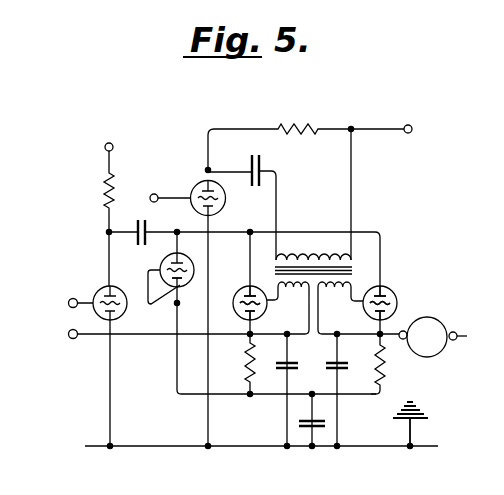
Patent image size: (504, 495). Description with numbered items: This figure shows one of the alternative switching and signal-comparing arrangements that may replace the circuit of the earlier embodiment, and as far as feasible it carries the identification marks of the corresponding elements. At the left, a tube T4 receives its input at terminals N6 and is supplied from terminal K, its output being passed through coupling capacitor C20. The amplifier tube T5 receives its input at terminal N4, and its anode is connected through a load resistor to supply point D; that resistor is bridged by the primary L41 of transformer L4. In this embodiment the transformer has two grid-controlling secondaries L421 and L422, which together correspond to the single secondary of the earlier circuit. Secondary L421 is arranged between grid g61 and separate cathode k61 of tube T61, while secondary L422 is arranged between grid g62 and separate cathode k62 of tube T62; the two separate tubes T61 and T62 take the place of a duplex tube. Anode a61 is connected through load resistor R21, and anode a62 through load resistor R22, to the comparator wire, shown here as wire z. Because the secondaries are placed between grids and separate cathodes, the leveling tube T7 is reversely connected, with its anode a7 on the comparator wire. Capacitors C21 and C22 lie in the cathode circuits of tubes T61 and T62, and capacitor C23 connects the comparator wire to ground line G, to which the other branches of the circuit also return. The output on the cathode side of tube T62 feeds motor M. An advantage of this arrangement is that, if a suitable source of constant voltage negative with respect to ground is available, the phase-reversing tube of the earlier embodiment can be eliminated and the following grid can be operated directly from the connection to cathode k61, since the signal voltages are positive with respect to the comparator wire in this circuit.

The supply terminal K is at (112, 141).
The supply point D is at (411, 133).
The input terminal N4 is at (152, 194).
The input terminals N6 is at (68, 334).
The ground line G is at (148, 446).
The tube T4 is at (96, 295).
The amplifier tube T5 is at (224, 300).
The leveling tube T7 is at (255, 313).
The anode of leveling tube a7 is at (179, 287).
The coupling capacitor C20 is at (137, 243).
The transformer L4 is at (333, 268).
The primary L41 is at (303, 253).
The grid-controlling secondary L421 is at (306, 291).
The grid-controlling secondary L422 is at (336, 291).
The tube T61 is at (238, 289).
The anode a61 is at (243, 286).
The grid g61 is at (233, 304).
The cathode k61 is at (243, 313).
The tube T62 is at (397, 299).
The anode a62 is at (382, 289).
The grid g62 is at (388, 296).
The cathode k62 is at (395, 305).
The load resistor R21 is at (248, 373).
The load resistor R22 is at (363, 364).
The capacitor C21 is at (292, 366).
The capacitor C22 is at (328, 365).
The capacitor C23 is at (317, 430).
The wire z is at (350, 395).
The motor M is at (433, 337).